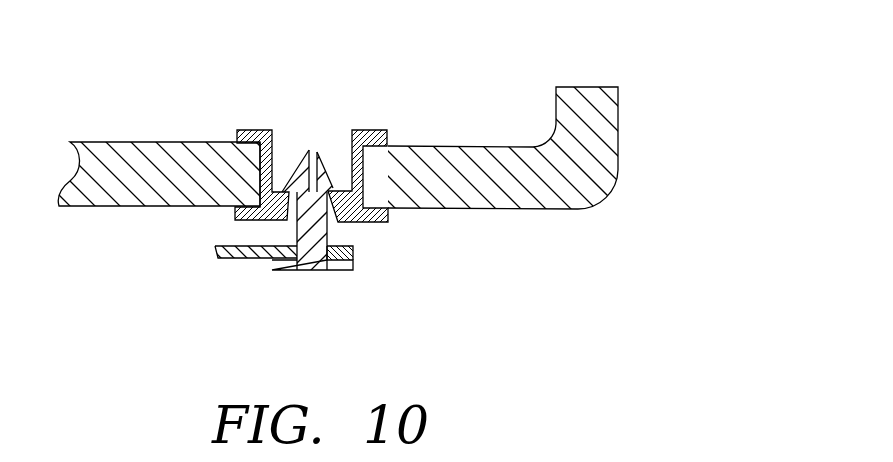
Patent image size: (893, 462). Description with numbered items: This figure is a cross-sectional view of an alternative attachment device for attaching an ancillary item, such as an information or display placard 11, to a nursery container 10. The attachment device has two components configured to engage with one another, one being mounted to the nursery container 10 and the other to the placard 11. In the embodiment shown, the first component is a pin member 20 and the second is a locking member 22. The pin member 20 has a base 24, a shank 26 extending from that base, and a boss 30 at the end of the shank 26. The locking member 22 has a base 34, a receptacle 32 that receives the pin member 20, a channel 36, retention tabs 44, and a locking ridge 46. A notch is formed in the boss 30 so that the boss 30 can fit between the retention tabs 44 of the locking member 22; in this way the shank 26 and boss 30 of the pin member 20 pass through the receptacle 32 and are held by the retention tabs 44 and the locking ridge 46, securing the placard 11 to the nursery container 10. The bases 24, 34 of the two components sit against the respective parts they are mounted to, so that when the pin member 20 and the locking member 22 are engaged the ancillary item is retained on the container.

The nursery container 10 is at (655, 133).
The placard 11 is at (228, 259).
The pin member 20 is at (313, 300).
The locking member 22 is at (246, 102).
The base 24 is at (354, 265).
The shank 26 is at (327, 237).
The boss 30 is at (318, 153).
The receptacle 32 is at (268, 221).
The base 34 is at (237, 137).
The channel 36 is at (348, 142).
The retention tabs 44 is at (295, 205).
The locking ridge 46 is at (342, 192).